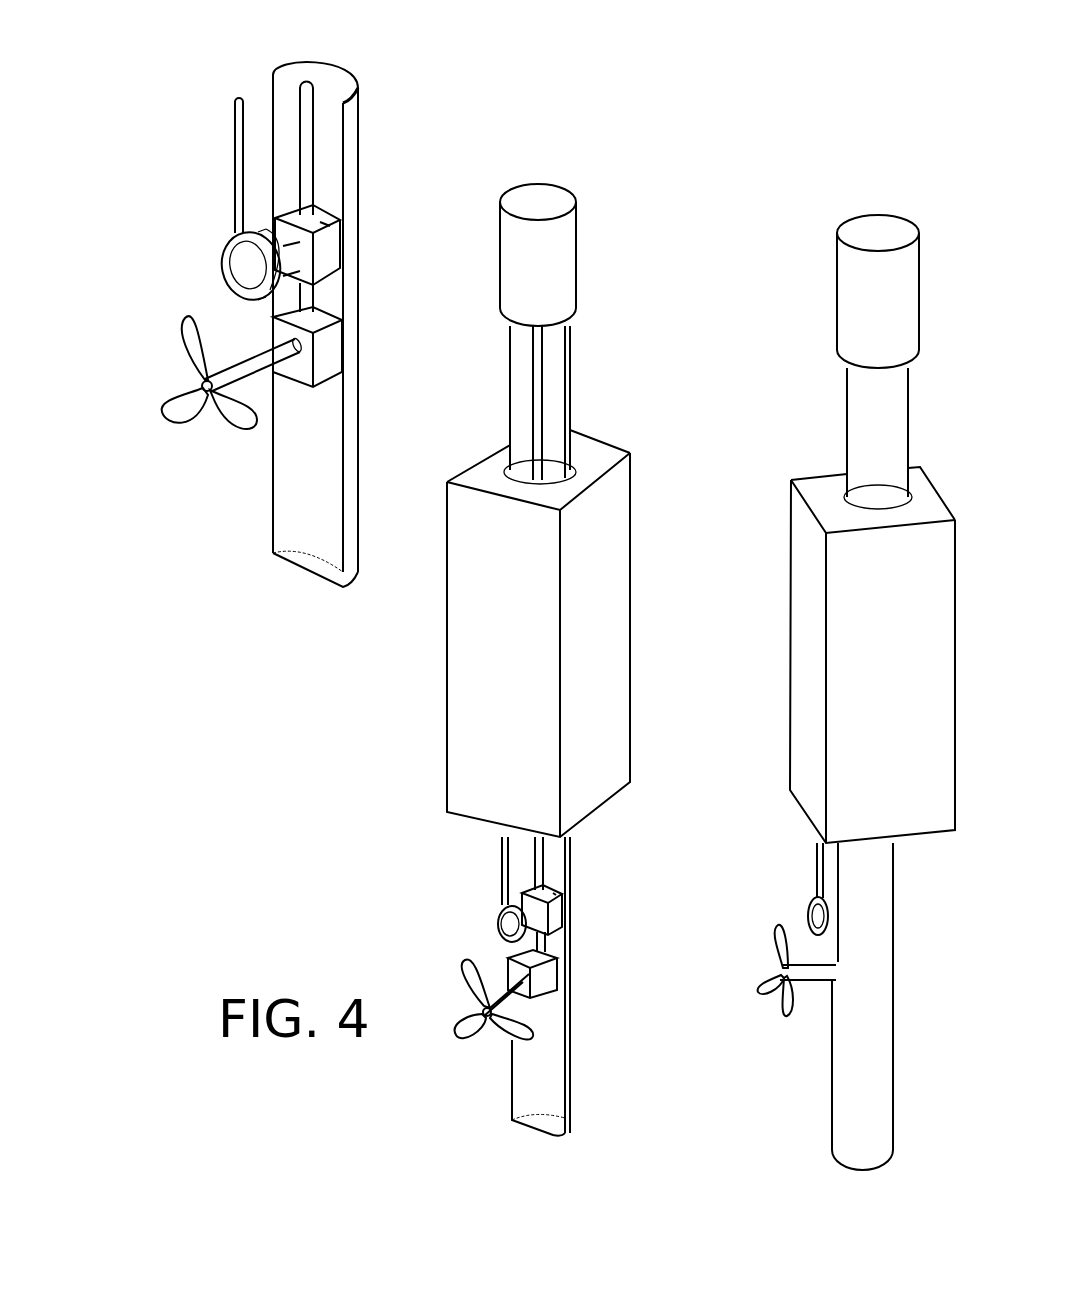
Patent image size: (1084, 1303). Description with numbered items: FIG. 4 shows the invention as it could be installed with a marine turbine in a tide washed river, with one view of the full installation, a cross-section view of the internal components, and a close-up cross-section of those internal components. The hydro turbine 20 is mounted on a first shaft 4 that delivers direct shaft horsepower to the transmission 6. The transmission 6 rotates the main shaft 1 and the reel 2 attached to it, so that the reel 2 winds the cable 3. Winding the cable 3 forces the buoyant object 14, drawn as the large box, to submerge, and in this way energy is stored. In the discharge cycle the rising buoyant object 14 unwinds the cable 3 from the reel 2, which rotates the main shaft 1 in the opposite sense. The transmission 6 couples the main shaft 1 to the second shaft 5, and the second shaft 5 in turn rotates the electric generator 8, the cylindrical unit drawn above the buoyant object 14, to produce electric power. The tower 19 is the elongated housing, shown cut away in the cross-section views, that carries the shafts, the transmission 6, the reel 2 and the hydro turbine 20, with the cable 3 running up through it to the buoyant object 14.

The main shaft 1 is at (288, 222).
The reel 2 is at (227, 280).
The cable 3 is at (230, 158).
The first shaft 4 is at (302, 305).
The second shaft 5 is at (315, 117).
The transmission 6 is at (317, 238).
The electric generator 8 is at (508, 265).
The buoyant object 14 is at (488, 714).
The tower 19 is at (267, 507).
The hydro turbine 20 is at (243, 360).